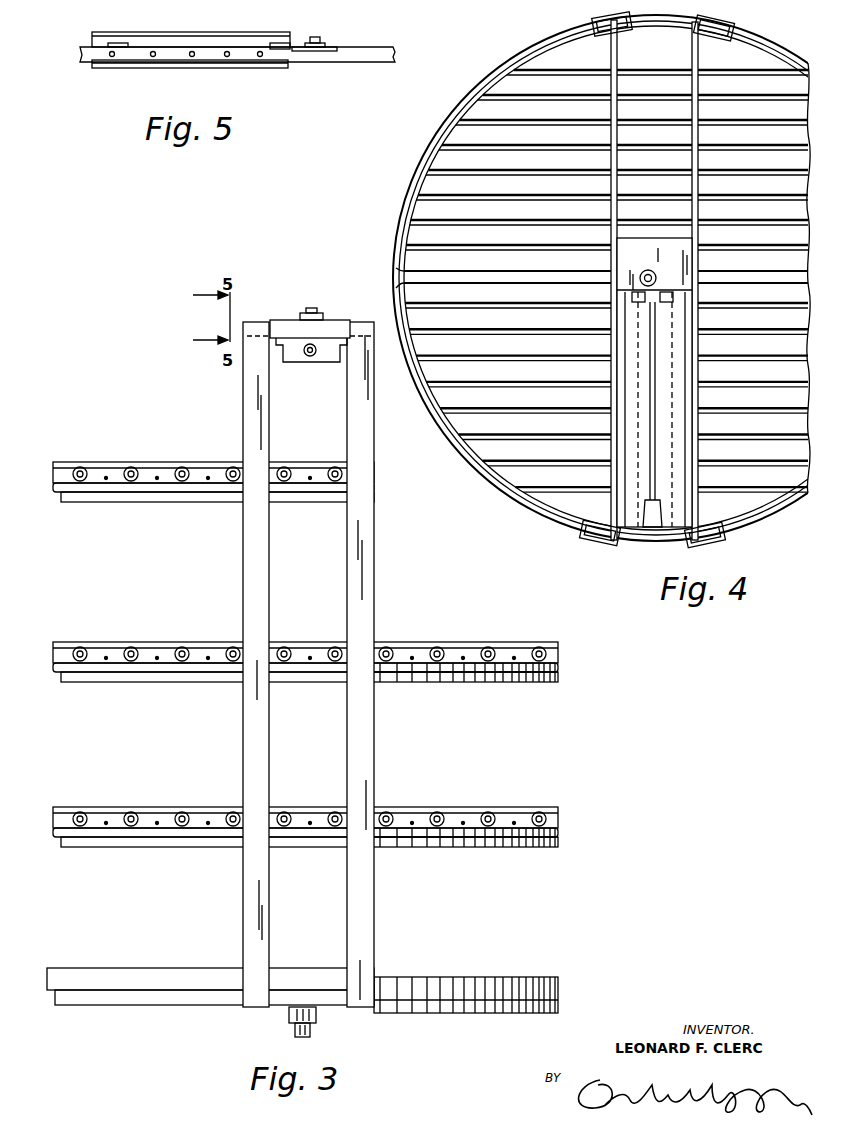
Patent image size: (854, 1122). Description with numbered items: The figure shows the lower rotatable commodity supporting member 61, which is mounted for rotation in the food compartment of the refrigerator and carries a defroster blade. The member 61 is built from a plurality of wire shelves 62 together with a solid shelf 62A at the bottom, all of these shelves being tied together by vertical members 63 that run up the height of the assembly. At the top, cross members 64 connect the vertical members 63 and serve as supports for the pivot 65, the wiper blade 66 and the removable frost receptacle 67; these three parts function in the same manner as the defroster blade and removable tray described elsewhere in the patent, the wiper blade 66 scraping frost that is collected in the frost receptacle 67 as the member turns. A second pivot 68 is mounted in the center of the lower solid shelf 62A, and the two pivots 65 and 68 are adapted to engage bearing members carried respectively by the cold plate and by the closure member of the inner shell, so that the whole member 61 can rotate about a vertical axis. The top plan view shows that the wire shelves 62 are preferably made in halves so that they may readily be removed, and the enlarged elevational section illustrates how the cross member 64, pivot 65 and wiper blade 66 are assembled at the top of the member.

In FIG. 3, the commodity supporting member 61 is at (375, 556).
In FIG. 3, the wire shelves 62 is at (562, 655).
In FIG. 3, the solid shelf 62A is at (562, 983).
In FIG. 4, the vertical members 63 is at (730, 22).
In FIG. 3, the vertical members 63 is at (243, 748).
In FIG. 5, the cross members 64 is at (355, 62).
In FIG. 4, the cross members 64 is at (611, 215).
In FIG. 5, the pivot 65 is at (313, 38).
In FIG. 4, the pivot 65 is at (645, 273).
In FIG. 3, the pivot 65 is at (308, 310).
In FIG. 5, the wiper blade 66 is at (227, 45).
In FIG. 4, the wiper blade 66 is at (655, 395).
In FIG. 3, the wiper blade 66 is at (316, 310).
In FIG. 3, the removable frost receptacle 67 is at (327, 358).
In FIG. 3, the second pivot 68 is at (317, 1020).